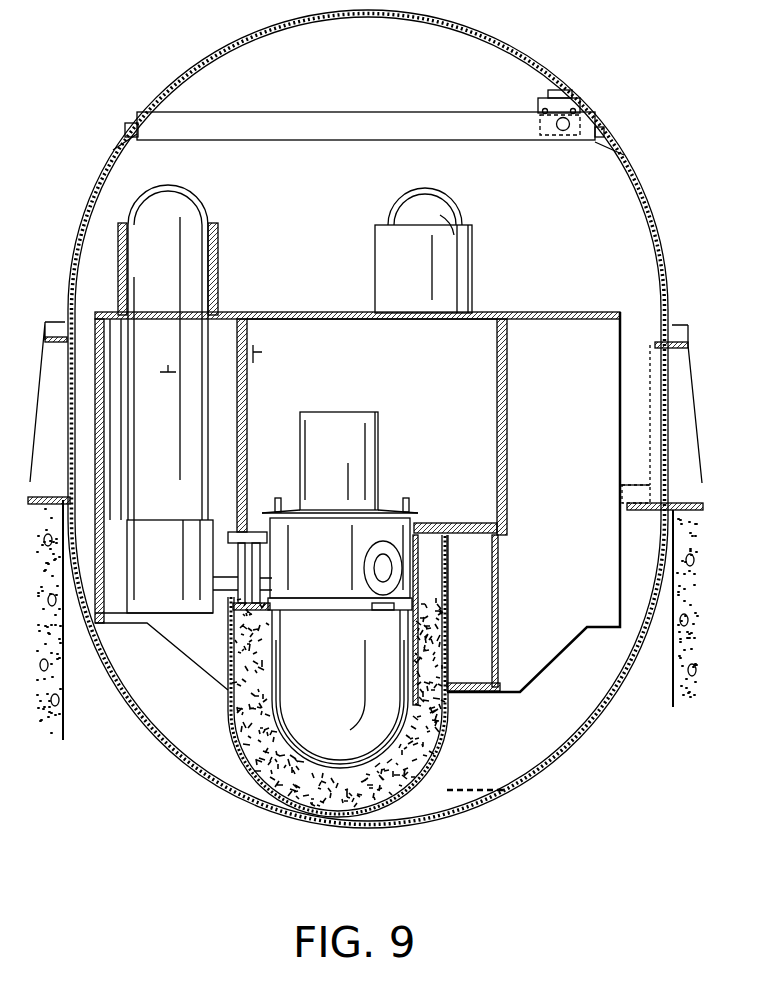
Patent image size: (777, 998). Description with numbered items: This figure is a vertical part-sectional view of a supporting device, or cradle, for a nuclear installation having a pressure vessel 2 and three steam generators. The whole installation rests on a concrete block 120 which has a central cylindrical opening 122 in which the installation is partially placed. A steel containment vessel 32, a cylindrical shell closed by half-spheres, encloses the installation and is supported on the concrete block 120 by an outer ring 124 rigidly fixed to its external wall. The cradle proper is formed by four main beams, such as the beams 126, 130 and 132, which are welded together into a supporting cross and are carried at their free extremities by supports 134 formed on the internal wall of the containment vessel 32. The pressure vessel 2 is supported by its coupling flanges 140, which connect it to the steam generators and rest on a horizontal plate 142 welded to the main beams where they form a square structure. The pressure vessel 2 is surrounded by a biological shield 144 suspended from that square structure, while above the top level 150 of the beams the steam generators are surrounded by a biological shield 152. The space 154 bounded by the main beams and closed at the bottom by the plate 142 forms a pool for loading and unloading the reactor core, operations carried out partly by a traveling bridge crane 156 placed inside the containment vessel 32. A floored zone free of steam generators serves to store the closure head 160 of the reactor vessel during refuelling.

The containment vessel 32 is at (643, 175).
The traveling bridge crane 156 is at (349, 120).
The top level of the beams 150 is at (288, 313).
The biological shield 152 is at (222, 237).
The main beam 132 is at (246, 400).
The main beam 130 is at (505, 332).
The space 154 is at (380, 365).
The main beam 126 is at (588, 336).
The closure head 160 is at (362, 457).
The coupling flange 140 is at (267, 583).
The pressure vessel 2 is at (360, 730).
The horizontal plate 142 is at (500, 675).
The biological shield 144 is at (252, 786).
The concrete block 120 is at (65, 700).
The central cylindrical opening 122 is at (673, 695).
The outer ring 124 is at (683, 502).
The support 134 is at (635, 522).